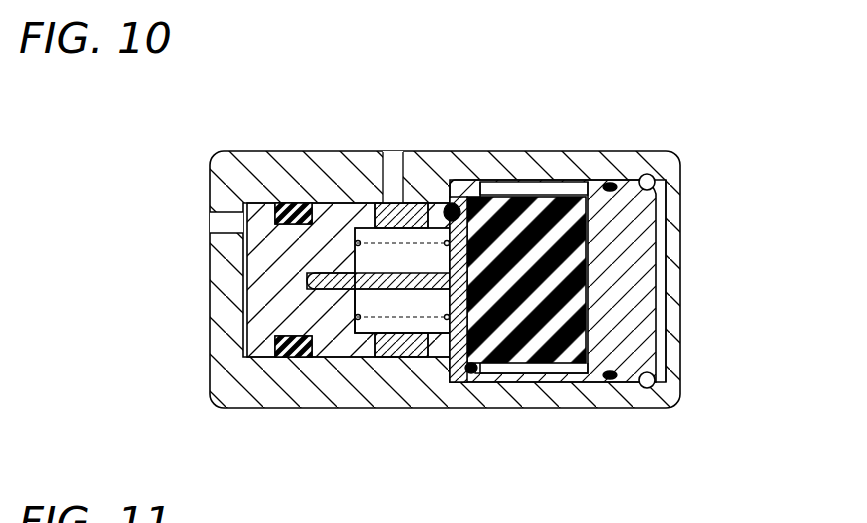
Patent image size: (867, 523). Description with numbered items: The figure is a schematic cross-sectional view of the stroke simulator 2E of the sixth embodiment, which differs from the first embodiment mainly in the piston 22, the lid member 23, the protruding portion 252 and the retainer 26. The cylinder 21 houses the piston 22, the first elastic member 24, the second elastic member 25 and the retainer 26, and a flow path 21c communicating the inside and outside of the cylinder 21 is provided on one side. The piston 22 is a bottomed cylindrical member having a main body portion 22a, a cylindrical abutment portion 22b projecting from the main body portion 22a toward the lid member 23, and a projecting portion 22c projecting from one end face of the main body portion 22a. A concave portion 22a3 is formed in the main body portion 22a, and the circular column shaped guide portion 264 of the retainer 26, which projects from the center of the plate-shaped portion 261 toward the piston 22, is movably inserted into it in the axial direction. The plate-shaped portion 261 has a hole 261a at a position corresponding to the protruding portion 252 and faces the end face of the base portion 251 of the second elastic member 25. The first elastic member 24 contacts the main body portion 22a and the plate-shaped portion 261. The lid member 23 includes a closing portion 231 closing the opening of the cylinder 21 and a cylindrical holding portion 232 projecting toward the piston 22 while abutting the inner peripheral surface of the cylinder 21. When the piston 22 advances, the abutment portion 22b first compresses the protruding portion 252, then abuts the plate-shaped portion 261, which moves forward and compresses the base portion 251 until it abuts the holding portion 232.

The stroke simulator 2E is at (145, 129).
The cylinder 21 is at (222, 263).
The flow path 21c is at (397, 165).
The piston 22 is at (248, 287).
The main body portion 22a is at (280, 207).
The concave portion 22a3 is at (293, 358).
The abutment portion 22b is at (382, 202).
The projecting portion 22c is at (305, 283).
The lid member 23 is at (635, 267).
The closing portion 231 is at (630, 220).
The holding portion 232 is at (560, 150).
The first elastic member 24 is at (408, 358).
The second elastic member 25 is at (587, 327).
The base portion 251 is at (540, 382).
The protruding portion 252 is at (443, 205).
The retainer 26 is at (460, 382).
The plate-shaped portion 261 is at (451, 383).
The hole 261a is at (485, 192).
The guide portion 264 is at (356, 330).